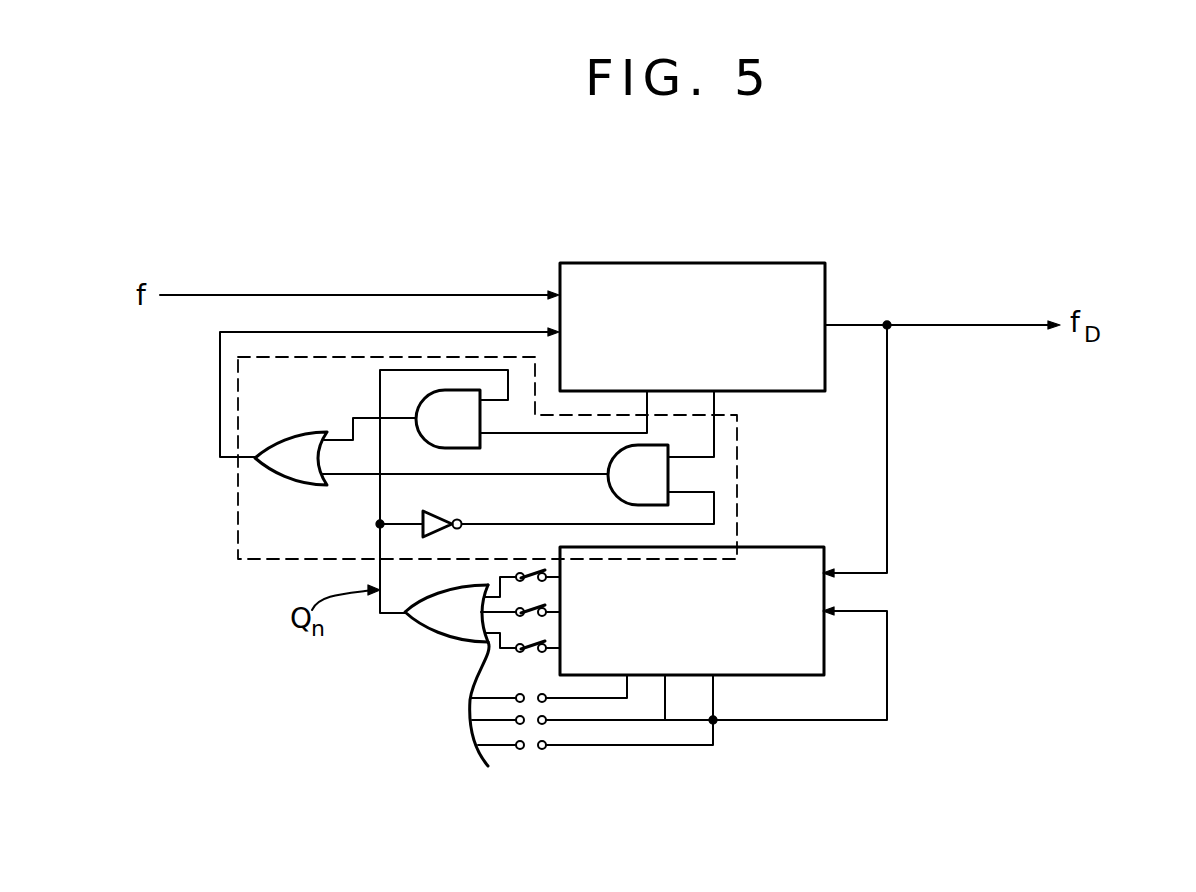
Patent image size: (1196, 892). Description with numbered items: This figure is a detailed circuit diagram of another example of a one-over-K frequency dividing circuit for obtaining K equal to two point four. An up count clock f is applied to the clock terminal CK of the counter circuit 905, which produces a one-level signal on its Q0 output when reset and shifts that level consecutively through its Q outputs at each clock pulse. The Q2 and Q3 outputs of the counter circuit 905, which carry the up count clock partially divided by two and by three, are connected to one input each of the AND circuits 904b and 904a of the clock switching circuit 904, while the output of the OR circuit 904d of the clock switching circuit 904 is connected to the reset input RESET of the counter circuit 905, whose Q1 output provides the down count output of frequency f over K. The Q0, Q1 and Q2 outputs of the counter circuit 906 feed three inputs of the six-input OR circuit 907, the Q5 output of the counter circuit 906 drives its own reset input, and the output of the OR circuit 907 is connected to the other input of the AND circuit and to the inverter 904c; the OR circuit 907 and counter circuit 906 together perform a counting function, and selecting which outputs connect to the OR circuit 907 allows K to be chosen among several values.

The clock switching circuit 904 is at (238, 506).
The AND circuit 904a is at (668, 479).
The AND circuit 904b is at (458, 448).
The inverter 904c is at (432, 512).
The OR circuit 904d is at (292, 432).
The counter circuit 905 is at (813, 262).
The counter circuit 906 is at (781, 675).
The 6 input OR circuit 907 is at (432, 645).